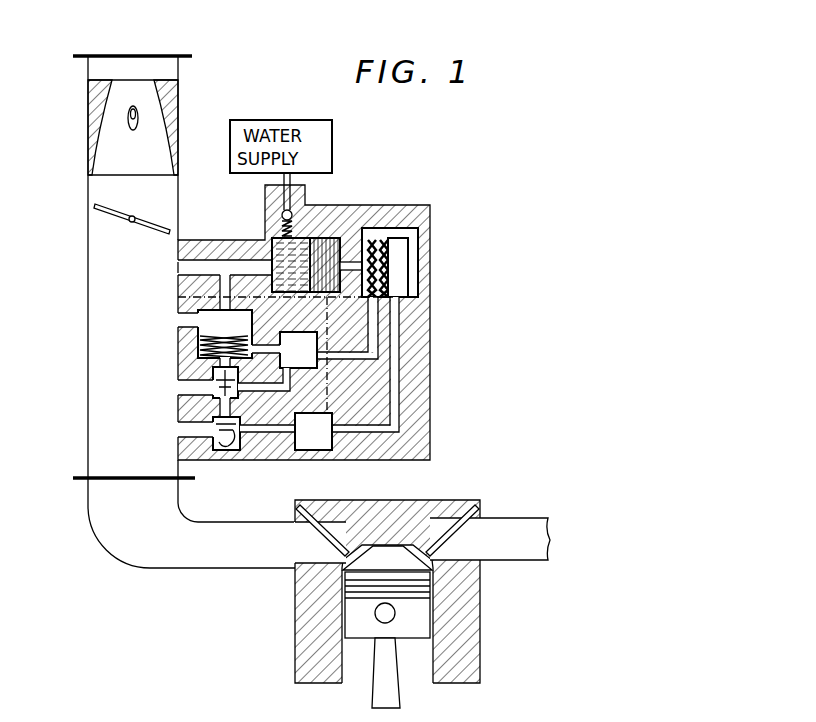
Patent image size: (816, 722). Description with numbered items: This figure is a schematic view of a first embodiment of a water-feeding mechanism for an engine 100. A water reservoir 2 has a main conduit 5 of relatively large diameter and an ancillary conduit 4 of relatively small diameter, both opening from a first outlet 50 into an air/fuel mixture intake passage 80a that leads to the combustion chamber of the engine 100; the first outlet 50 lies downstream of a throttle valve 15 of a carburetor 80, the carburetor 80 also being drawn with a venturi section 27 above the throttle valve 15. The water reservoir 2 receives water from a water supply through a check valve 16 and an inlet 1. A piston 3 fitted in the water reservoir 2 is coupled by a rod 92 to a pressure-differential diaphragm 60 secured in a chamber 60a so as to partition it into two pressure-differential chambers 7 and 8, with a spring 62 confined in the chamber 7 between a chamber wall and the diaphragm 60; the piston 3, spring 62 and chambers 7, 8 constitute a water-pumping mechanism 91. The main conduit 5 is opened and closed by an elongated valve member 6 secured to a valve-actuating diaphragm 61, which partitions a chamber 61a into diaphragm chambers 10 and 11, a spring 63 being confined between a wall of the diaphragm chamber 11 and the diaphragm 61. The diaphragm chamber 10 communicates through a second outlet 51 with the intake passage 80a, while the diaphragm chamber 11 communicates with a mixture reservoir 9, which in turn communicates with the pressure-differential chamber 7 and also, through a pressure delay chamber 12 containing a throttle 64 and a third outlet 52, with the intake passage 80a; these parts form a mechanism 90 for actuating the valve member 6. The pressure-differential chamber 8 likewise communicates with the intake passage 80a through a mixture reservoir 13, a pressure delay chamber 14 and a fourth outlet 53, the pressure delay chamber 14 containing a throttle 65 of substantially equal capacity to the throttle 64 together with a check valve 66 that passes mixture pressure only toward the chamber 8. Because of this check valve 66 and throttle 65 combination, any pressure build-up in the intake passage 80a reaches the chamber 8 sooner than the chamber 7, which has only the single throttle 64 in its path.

The inlet 1 is at (290, 175).
The water reservoir 2 is at (292, 238).
The piston 3 is at (326, 238).
The ancillary conduit 4 is at (191, 260).
The main conduit 5 is at (208, 262).
The valve member 6 is at (229, 262).
The pressure-differential chamber 7 is at (376, 238).
The pressure-differential chamber 8 is at (398, 240).
The mixture reservoir 9 is at (306, 361).
The diaphragm chamber 10 is at (218, 292).
The diaphragm chamber 11 is at (198, 345).
The pressure delay chamber 12 is at (213, 420).
The mixture reservoir 13 is at (324, 442).
The pressure delay chamber 14 is at (240, 440).
The throttle valve 15 is at (108, 205).
The check valve 16 is at (282, 213).
The venturi 27 is at (172, 122).
The first outlet 50 is at (176, 268).
The second outlet 51 is at (178, 322).
The third outlet 52 is at (178, 388).
The fourth outlet 53 is at (178, 435).
The pressure-differential diaphragm 60 is at (408, 248).
The chamber 60a is at (420, 268).
The valve-actuating diaphragm 61 is at (198, 318).
The chamber 61a is at (250, 318).
The spring 62 is at (382, 240).
The spring 63 is at (200, 362).
The throttle 64 is at (213, 382).
The throttle 65 is at (213, 428).
The check valve 66 is at (228, 452).
The carburetor 80 is at (86, 270).
The air/fuel mixture intake passage 80a is at (98, 322).
The mechanism for actuating the valve member 90 is at (329, 360).
The water-pumping mechanism 91 is at (420, 290).
The rod 92 is at (352, 262).
The engine 100 is at (486, 612).